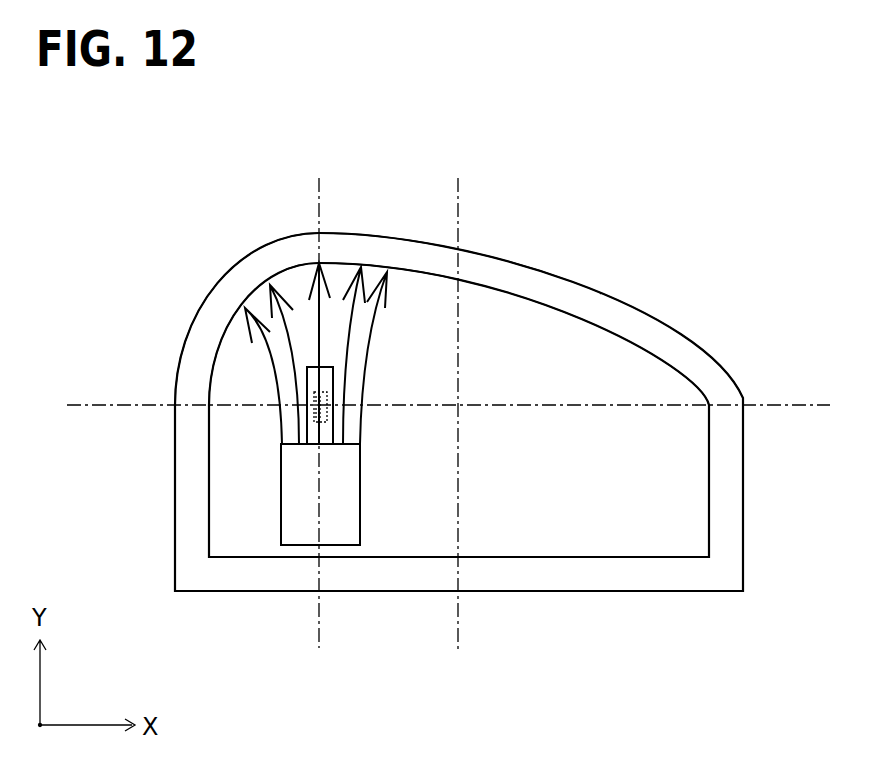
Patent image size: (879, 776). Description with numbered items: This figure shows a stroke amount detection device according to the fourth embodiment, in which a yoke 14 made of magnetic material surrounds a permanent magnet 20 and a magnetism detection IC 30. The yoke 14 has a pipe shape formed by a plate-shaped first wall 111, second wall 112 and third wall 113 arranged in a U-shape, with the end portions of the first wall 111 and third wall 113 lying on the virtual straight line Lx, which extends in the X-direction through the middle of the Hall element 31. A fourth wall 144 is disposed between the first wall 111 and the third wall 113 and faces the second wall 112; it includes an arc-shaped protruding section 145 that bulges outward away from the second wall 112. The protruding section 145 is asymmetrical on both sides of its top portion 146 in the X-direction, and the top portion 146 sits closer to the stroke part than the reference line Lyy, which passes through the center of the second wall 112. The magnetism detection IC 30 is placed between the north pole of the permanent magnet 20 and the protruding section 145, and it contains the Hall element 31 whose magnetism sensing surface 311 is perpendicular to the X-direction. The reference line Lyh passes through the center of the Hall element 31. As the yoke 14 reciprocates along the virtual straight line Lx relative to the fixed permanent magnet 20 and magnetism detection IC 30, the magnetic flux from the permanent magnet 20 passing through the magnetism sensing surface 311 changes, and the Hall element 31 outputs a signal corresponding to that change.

The yoke 14 is at (456, 435).
The first wall 111 is at (726, 512).
The second wall 112 is at (553, 580).
The third wall 113 is at (182, 500).
The fourth wall 144 is at (553, 287).
The protruding section 145 is at (602, 303).
The top portion 146 is at (308, 253).
The permanent magnet 20 is at (355, 512).
The magnetism detection IC 30 is at (327, 430).
The Hall element 31 is at (327, 395).
The magnetism sensing surface 311 is at (330, 410).
The reference line of the Hall element Lyh is at (316, 213).
The reference line of the yoke Lyy is at (460, 213).
The virtual straight line Lx is at (112, 405).